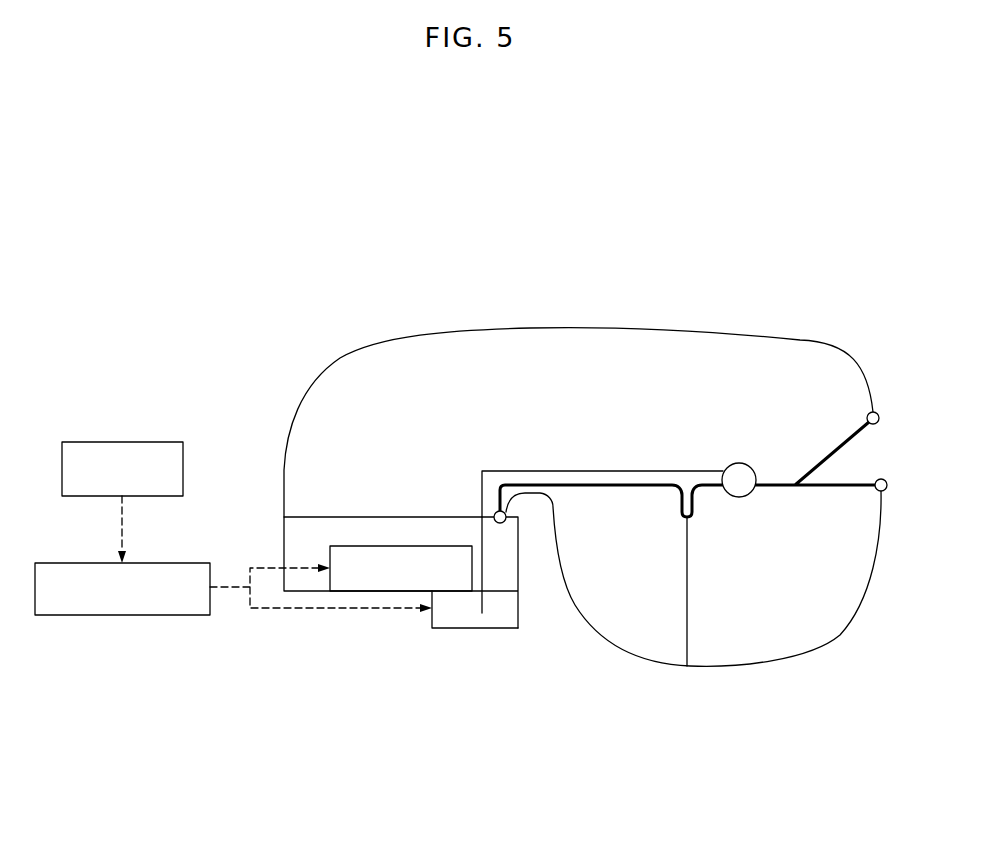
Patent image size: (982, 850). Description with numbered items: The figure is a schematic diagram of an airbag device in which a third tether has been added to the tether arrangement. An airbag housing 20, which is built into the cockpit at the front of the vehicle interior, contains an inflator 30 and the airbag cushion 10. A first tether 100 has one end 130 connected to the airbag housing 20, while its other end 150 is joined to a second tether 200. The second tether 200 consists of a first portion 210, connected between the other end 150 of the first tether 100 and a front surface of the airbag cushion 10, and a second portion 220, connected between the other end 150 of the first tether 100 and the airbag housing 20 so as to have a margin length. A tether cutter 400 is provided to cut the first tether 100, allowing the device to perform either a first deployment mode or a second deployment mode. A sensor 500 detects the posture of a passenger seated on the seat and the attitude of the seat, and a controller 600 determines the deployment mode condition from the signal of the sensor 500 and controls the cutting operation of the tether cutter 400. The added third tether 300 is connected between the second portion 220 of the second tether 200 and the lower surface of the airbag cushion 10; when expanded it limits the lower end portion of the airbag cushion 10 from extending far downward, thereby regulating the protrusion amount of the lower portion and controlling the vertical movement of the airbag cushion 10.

The airbag cushion 10 is at (487, 333).
The airbag housing 20 is at (503, 592).
The inflator 30 is at (347, 546).
The first tether 100 is at (641, 470).
The one end of the first tether 130 is at (486, 592).
The other end of the first tether 150 is at (724, 466).
The second tether 200 is at (690, 608).
The first portion 210 is at (857, 485).
The second portion 220 is at (625, 487).
The third tether 300 is at (690, 577).
The tether cutter 400 is at (440, 620).
The sensor 500 is at (110, 442).
The controller 600 is at (146, 616).